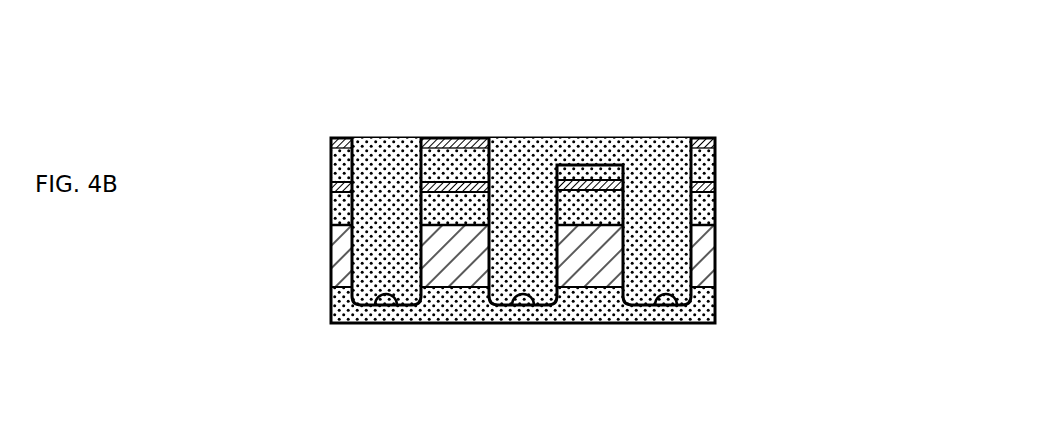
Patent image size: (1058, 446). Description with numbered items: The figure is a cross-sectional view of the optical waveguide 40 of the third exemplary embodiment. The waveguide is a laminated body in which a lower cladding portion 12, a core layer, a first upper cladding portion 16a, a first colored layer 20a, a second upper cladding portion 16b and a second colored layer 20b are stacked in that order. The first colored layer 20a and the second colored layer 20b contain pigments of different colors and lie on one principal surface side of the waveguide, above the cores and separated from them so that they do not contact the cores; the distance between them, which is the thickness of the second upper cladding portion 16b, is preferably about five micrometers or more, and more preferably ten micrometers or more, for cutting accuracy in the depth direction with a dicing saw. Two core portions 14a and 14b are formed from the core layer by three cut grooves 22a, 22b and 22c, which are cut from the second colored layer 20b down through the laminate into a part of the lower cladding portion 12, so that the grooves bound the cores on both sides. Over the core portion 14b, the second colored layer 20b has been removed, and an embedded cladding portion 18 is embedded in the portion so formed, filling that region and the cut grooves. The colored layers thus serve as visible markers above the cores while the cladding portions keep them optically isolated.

The lower cladding portion 12 is at (716, 297).
The core portion 14a is at (451, 272).
The core portion 14b is at (594, 268).
The first upper cladding portion 16a is at (331, 210).
The second upper cladding portion 16b is at (331, 163).
The embedded cladding portion 18 is at (387, 158).
The first colored layer 20a is at (592, 180).
The second colored layer 20b is at (337, 137).
The cut groove 22a is at (396, 305).
The cut groove 22b is at (535, 305).
The cut groove 22c is at (680, 305).
The optical waveguide 40 is at (831, 90).